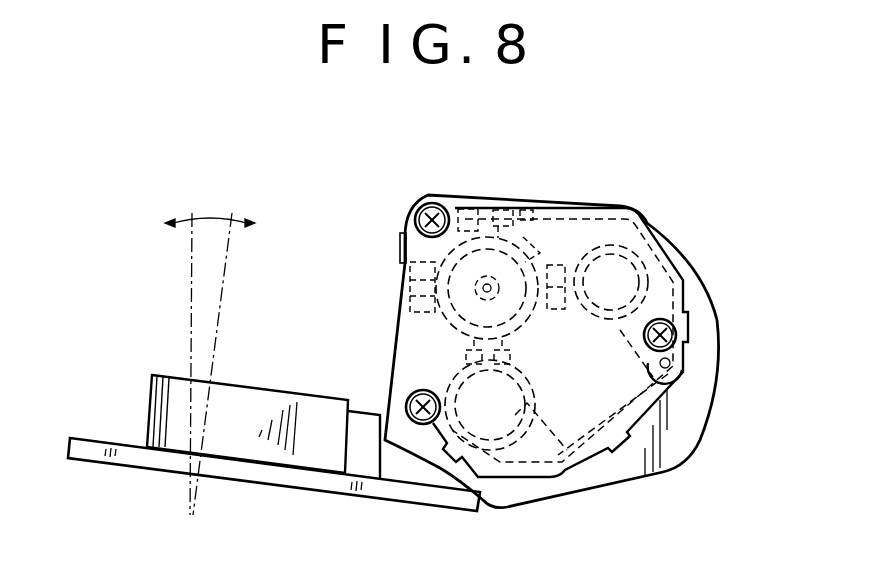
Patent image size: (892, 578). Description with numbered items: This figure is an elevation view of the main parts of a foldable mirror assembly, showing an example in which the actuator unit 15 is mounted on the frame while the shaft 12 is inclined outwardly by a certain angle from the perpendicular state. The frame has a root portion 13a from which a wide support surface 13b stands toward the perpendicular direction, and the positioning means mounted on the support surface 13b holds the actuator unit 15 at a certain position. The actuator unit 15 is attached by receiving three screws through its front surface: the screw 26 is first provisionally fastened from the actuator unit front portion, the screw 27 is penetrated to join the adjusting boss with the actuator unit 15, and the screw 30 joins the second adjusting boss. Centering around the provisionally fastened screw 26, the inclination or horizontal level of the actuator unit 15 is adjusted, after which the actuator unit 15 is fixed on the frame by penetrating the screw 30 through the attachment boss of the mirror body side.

The shaft 12 is at (222, 306).
The root portion 13a is at (240, 480).
The support surface 13b is at (713, 312).
The actuator unit 15 is at (578, 218).
The screw 26 is at (410, 401).
The screw 27 is at (415, 211).
The screw 30 is at (672, 345).